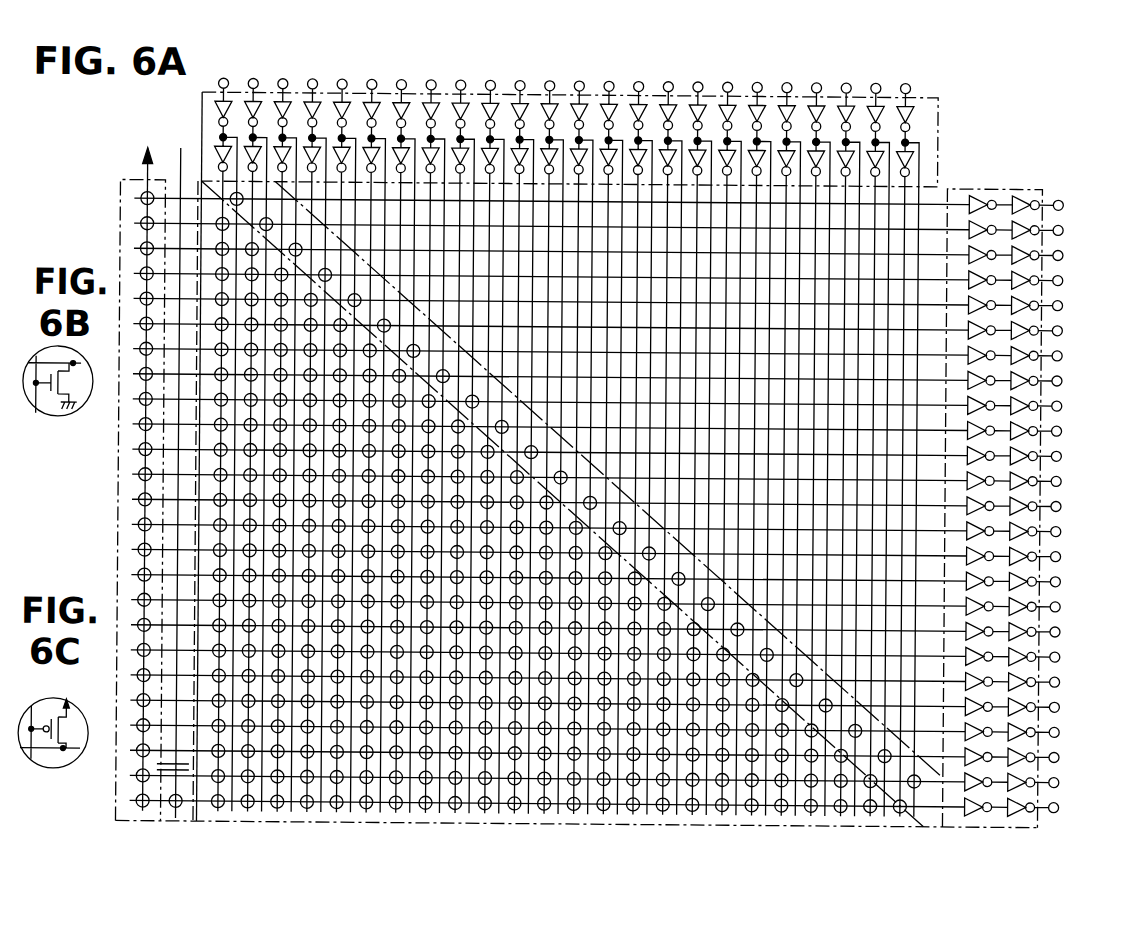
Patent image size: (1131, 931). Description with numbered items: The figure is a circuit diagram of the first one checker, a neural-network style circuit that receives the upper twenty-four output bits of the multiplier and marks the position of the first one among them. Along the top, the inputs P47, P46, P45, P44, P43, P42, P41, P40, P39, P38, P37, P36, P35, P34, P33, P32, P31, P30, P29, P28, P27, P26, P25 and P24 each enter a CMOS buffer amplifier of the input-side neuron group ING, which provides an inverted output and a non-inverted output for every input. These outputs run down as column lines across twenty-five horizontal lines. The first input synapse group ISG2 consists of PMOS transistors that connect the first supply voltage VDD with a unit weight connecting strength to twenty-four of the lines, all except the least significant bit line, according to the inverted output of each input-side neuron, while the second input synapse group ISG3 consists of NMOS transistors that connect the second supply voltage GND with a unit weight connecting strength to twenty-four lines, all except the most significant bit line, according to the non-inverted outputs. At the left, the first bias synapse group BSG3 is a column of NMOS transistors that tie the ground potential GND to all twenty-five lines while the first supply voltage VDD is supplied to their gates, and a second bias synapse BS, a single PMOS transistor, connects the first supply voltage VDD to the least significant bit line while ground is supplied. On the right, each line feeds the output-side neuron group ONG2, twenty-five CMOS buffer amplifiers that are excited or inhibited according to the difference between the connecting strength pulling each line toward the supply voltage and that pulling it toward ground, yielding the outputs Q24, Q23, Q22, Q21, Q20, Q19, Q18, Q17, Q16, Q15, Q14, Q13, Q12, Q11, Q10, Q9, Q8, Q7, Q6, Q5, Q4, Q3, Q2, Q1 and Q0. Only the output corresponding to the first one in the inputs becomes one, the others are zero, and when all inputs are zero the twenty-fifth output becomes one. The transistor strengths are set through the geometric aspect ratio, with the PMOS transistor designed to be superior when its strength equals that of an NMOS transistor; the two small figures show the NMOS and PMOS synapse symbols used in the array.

In FIG. 6A, the input P47 is at (224, 433).
In FIG. 6A, the input P46 is at (254, 422).
In FIG. 6A, the input P45 is at (284, 434).
In FIG. 6A, the input P44 is at (313, 423).
In FIG. 6A, the input P43 is at (343, 434).
In FIG. 6A, the input P42 is at (373, 423).
In FIG. 6A, the input P41 is at (402, 435).
In FIG. 6A, the input P40 is at (432, 424).
In FIG. 6A, the input P39 is at (461, 435).
In FIG. 6A, the input P38 is at (491, 424).
In FIG. 6A, the input P37 is at (521, 435).
In FIG. 6A, the input P36 is at (550, 425).
In FIG. 6A, the input P35 is at (580, 436).
In FIG. 6A, the input P34 is at (610, 425).
In FIG. 6A, the input P33 is at (639, 436).
In FIG. 6A, the input P32 is at (669, 426).
In FIG. 6A, the input P31 is at (699, 437).
In FIG. 6A, the input P30 is at (728, 426).
In FIG. 6A, the input P29 is at (758, 437).
In FIG. 6A, the input P28 is at (788, 427).
In FIG. 6A, the input P27 is at (817, 438).
In FIG. 6A, the input P26 is at (847, 427).
In FIG. 6A, the input P25 is at (876, 438).
In FIG. 6A, the input P24 is at (906, 427).
In FIG. 6A, the output Q24 is at (622, 202).
In FIG. 6A, the output Q23 is at (622, 227).
In FIG. 6A, the output Q22 is at (622, 252).
In FIG. 6A, the output Q21 is at (622, 277).
In FIG. 6A, the output Q20 is at (621, 302).
In FIG. 6A, the output Q19 is at (621, 328).
In FIG. 6A, the output Q18 is at (621, 353).
In FIG. 6A, the output Q17 is at (621, 378).
In FIG. 6A, the output Q16 is at (621, 403).
In FIG. 6A, the output Q15 is at (620, 428).
In FIG. 6A, the output Q14 is at (620, 453).
In FIG. 6A, the output Q13 is at (620, 478).
In FIG. 6A, the output Q12 is at (620, 503).
In FIG. 6A, the output Q11 is at (620, 528).
In FIG. 6A, the output Q10 is at (620, 553).
In FIG. 6A, the output Q9 is at (613, 579).
In FIG. 6A, the output Q8 is at (613, 604).
In FIG. 6A, the output Q7 is at (613, 629).
In FIG. 6A, the output Q6 is at (613, 654).
In FIG. 6A, the output Q5 is at (613, 679).
In FIG. 6A, the output Q4 is at (612, 704).
In FIG. 6A, the output Q3 is at (612, 729).
In FIG. 6A, the output Q2 is at (612, 754).
In FIG. 6A, the output Q1 is at (612, 779).
In FIG. 6A, the output Q0 is at (612, 804).
In FIG. 6A, the first supply voltage VDD is at (129, 466).
In FIG. 6C, the first supply voltage VDD is at (79, 699).
In FIG. 6A, the second supply voltage GND is at (178, 470).
In FIG. 6A, the second bias synapse BS is at (181, 813).
In FIG. 6A, the first bias synapse group BSG3 is at (121, 181).
In FIG. 6A, the input-side neuron group ING is at (932, 151).
In FIG. 6A, the output-side neuron group ONG2 is at (983, 191).
In FIG. 6A, the second input synapse group ISG3 is at (787, 822).
In FIG. 6A, the first input synapse group ISG2 is at (928, 800).